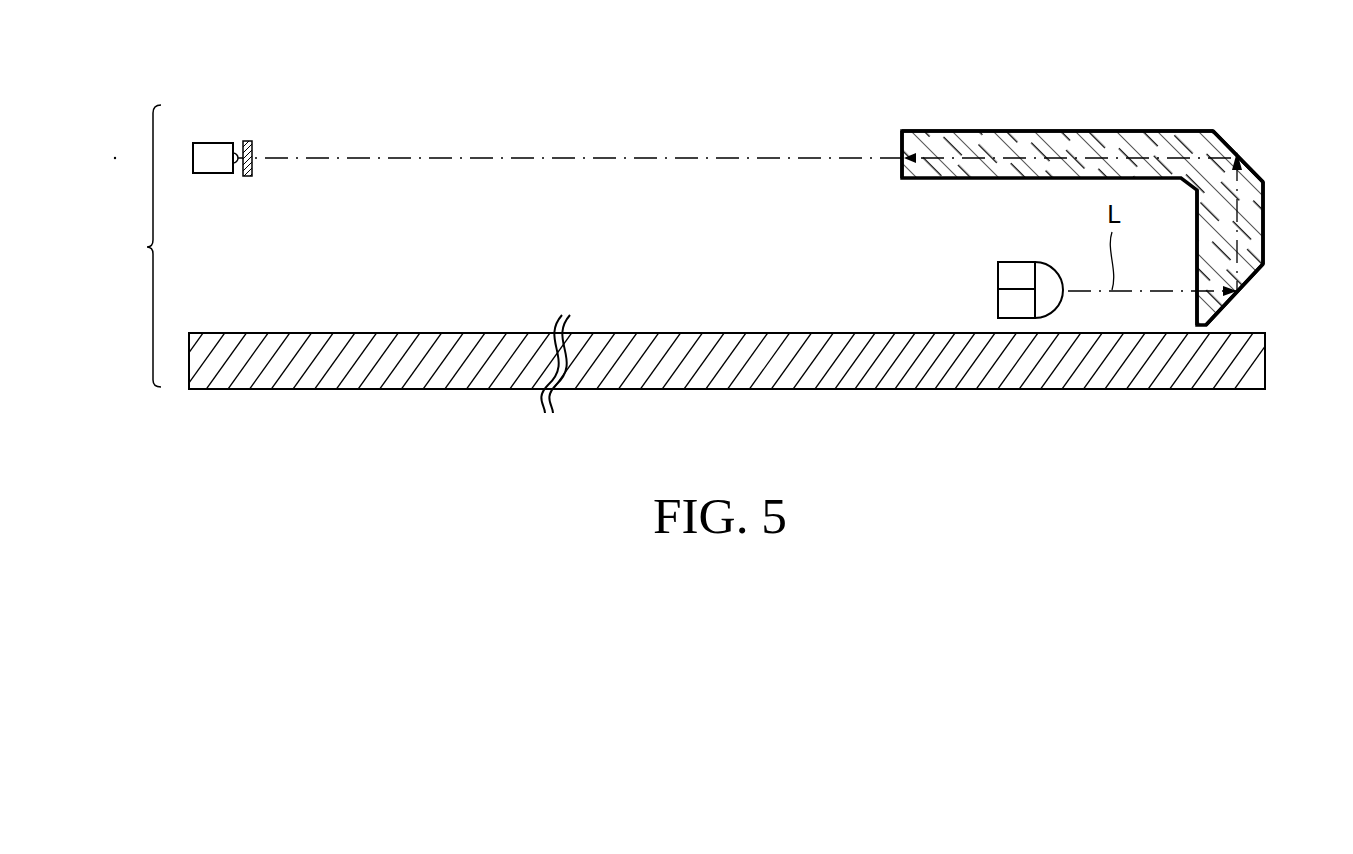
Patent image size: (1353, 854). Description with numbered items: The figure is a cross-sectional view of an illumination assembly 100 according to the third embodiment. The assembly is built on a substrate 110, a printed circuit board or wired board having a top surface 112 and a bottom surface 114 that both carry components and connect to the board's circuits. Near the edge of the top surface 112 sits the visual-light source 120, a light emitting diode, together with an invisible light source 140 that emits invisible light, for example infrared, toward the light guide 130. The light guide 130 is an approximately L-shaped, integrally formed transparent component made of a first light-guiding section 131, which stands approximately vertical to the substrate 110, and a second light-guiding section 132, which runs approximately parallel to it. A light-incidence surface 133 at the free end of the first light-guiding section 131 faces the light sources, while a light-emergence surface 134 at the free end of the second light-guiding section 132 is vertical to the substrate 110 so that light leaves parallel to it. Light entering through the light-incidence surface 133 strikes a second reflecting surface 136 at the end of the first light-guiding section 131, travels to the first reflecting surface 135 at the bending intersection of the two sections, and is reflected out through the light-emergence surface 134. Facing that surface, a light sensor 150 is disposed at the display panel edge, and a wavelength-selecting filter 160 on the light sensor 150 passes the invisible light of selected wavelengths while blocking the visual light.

The illumination assembly 100 is at (130, 246).
The substrate 110 is at (192, 358).
The top surface 112 is at (318, 324).
The bottom surface 114 is at (318, 398).
The visual-light source 120 is at (1010, 273).
The light guide 130 is at (1104, 120).
The first light-guiding section 131 is at (1247, 217).
The second light-guiding section 132 is at (962, 131).
The light-incidence surface 133 is at (1197, 273).
The light-emergence surface 134 is at (902, 140).
The first reflecting surface 135 is at (1233, 152).
The second reflecting surface 136 is at (1245, 292).
The invisible light source 140 is at (1008, 308).
The light sensor 150 is at (218, 143).
The wavelength-selecting filter 160 is at (250, 139).